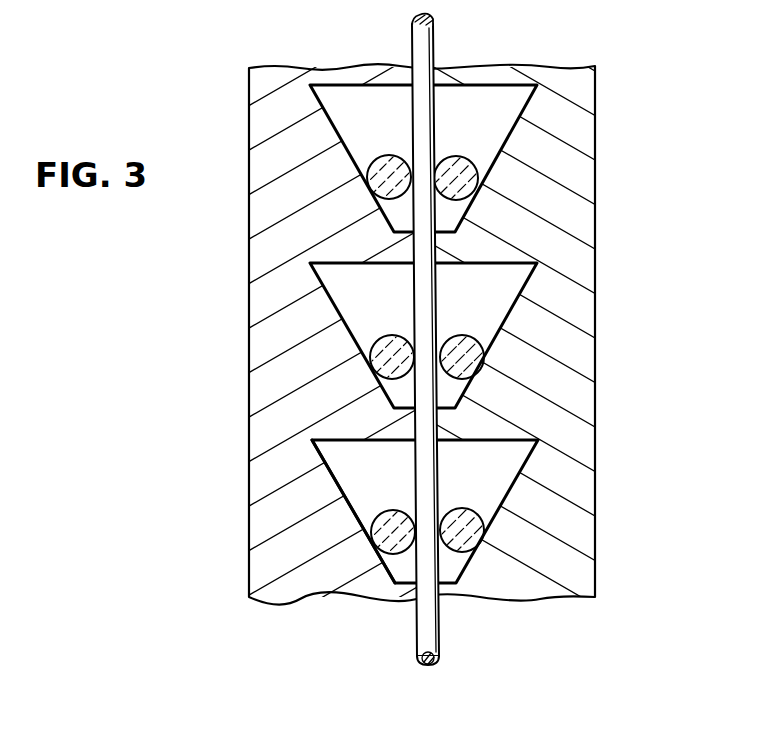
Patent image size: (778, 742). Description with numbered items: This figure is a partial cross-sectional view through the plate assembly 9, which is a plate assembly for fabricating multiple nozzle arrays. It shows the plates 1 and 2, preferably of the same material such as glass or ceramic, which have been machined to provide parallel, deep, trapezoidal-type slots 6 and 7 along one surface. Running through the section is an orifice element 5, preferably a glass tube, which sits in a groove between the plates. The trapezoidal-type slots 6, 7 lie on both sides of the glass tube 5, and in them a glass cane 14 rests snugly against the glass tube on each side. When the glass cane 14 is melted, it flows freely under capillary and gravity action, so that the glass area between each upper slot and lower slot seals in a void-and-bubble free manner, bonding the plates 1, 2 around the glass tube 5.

The plate 1 is at (585, 313).
The plate 2 is at (260, 306).
The orifice element 5 is at (427, 55).
The trapezoidal-type slot 6 is at (507, 472).
The trapezoidal-type slot 7 is at (338, 460).
The assembly 9 is at (630, 369).
The glass cane 14 is at (462, 380).